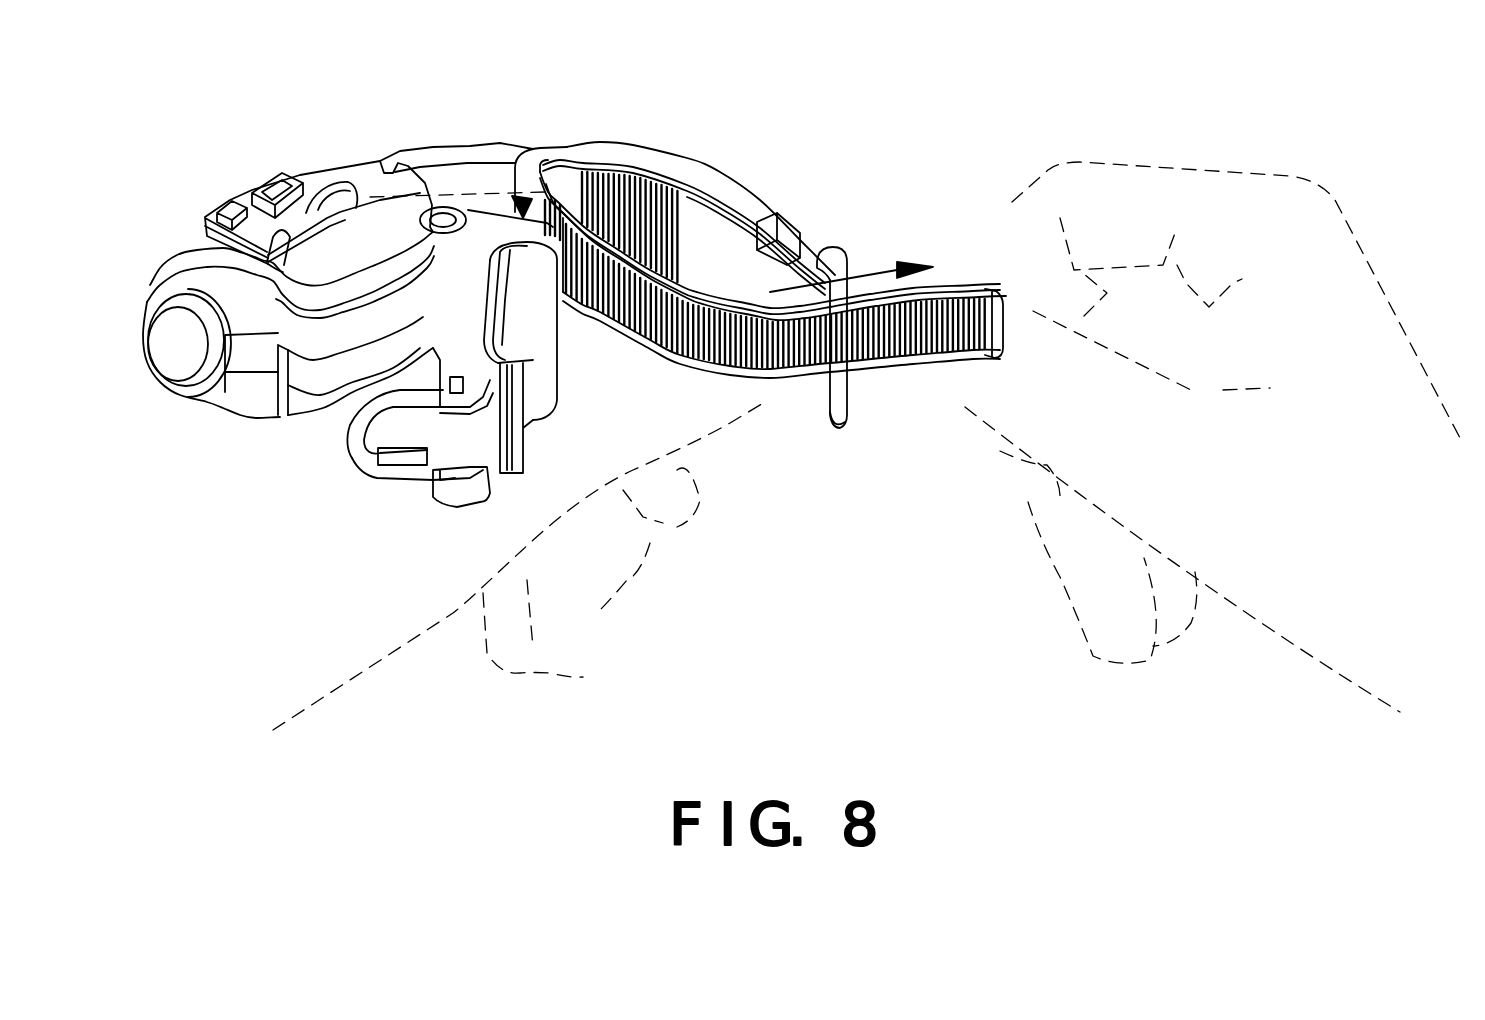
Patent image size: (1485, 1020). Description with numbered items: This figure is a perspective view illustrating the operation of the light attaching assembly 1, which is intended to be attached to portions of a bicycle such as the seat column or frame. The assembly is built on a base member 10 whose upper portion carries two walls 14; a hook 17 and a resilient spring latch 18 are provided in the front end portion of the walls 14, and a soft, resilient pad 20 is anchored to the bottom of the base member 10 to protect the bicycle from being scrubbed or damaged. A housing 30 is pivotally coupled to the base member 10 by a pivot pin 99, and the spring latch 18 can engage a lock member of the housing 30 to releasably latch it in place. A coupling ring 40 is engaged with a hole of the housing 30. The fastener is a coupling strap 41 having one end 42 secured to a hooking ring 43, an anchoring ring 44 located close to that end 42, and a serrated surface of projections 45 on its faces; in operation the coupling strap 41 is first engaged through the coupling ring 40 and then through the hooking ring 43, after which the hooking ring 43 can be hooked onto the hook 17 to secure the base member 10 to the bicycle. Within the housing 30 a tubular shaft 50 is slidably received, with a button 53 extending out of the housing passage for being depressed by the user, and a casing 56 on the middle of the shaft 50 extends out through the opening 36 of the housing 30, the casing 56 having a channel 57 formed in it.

The light attaching assembly 1 is at (852, 113).
The base member 10 is at (428, 352).
The walls 14 is at (360, 473).
The hook 17 is at (457, 497).
The spring latch 18 is at (340, 430).
The pad 20 is at (533, 415).
The housing 30 is at (177, 265).
The opening 36 is at (285, 245).
The coupling ring 40 is at (474, 148).
The coupling strap 41 is at (981, 298).
The one end 42 is at (823, 272).
The hooking ring 43 is at (836, 432).
The anchoring ring 44 is at (790, 222).
The projections 45 is at (758, 368).
The shaft 50 is at (326, 200).
The button 53 is at (178, 355).
The casing 56 is at (218, 208).
The channel 57 is at (265, 195).
The pivot pin 99 is at (447, 213).